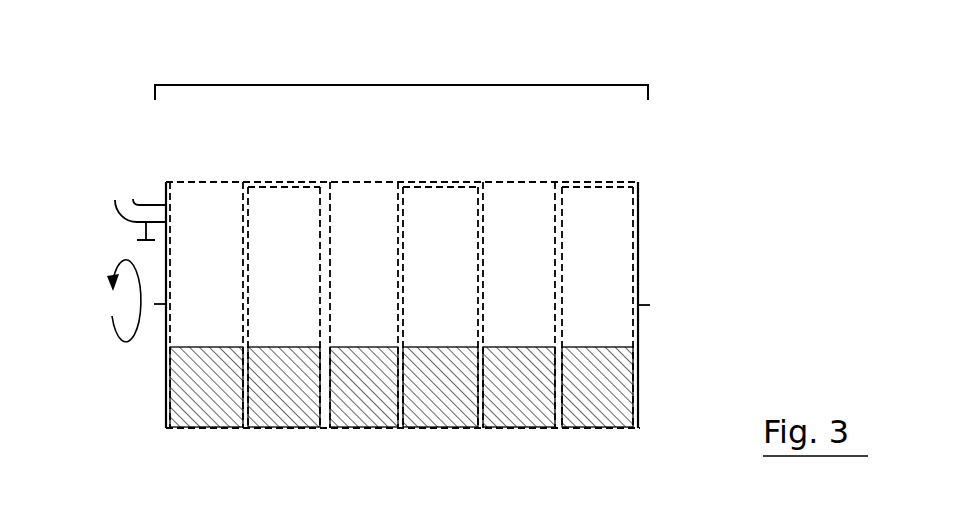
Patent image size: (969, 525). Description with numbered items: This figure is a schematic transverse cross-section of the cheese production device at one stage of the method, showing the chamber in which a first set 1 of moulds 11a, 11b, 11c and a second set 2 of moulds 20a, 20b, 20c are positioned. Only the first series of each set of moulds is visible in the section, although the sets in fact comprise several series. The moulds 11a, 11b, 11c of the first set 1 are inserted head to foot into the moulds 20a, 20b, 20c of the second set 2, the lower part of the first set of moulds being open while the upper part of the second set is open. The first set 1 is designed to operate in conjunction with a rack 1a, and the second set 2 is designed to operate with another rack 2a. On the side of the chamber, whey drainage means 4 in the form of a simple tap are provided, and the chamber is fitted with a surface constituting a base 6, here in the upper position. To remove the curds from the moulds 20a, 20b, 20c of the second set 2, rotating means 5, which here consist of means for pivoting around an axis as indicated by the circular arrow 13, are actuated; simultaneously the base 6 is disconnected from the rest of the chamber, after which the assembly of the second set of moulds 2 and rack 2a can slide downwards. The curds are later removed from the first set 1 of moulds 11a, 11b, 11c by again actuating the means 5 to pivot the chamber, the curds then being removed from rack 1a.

The base 6 is at (283, 85).
The first set of moulds 1 is at (554, 213).
The rack 1a is at (563, 183).
The second set of moulds 2 is at (638, 247).
The rotating means 5 is at (649, 305).
The rack 2a is at (538, 429).
The mould 11a is at (206, 305).
The mould 20a is at (284, 307).
The mould 11b is at (364, 305).
The mould 20b is at (440, 307).
The mould 11c is at (519, 305).
The mould 20c is at (597, 307).
The whey drainage means 4 is at (115, 200).
The circular arrow 13 is at (117, 350).